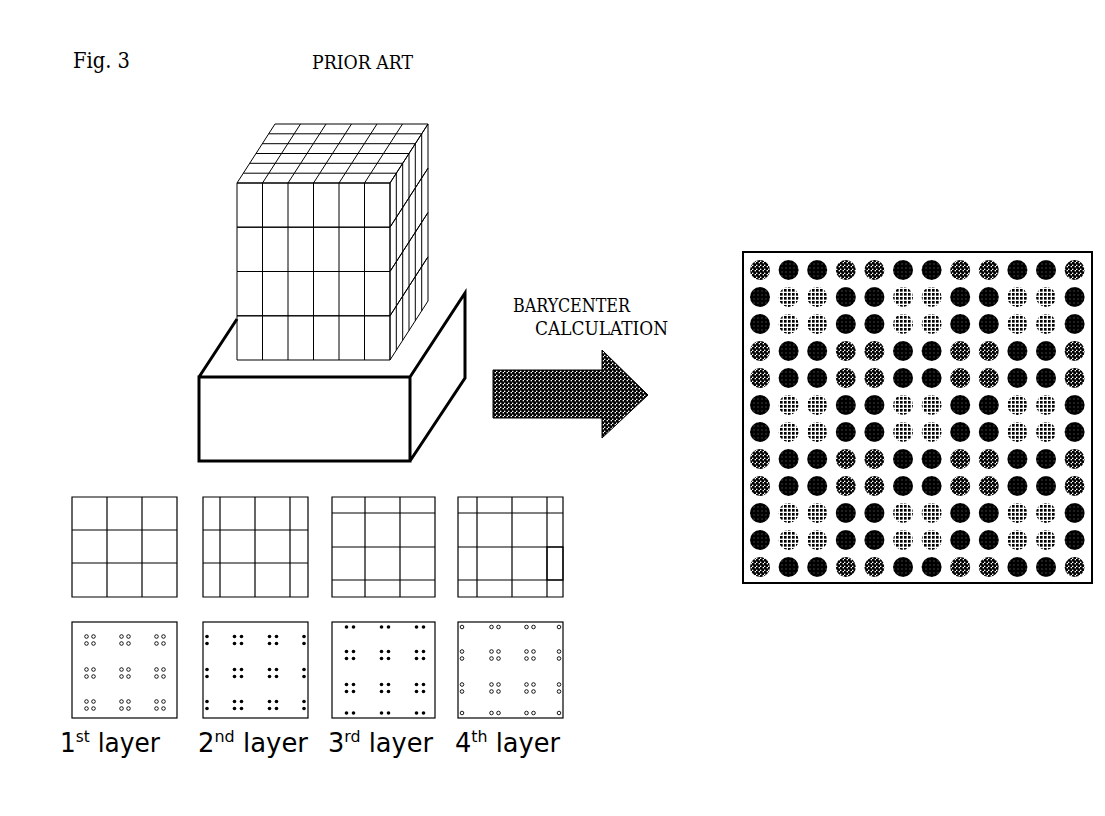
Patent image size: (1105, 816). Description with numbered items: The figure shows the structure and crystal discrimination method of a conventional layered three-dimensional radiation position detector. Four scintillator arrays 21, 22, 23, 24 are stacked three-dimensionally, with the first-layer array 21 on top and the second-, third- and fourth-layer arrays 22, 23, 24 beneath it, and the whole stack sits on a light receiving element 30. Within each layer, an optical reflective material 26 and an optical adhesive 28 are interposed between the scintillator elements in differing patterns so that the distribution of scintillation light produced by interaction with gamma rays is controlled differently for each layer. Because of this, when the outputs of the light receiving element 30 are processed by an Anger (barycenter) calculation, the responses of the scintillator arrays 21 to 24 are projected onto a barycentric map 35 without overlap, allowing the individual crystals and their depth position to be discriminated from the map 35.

The first-layer scintillator array 21 is at (237, 202).
The second-layer scintillator array 22 is at (237, 252).
The third-layer scintillator array 23 is at (237, 299).
The fourth-layer scintillator array 24 is at (237, 346).
The light receiving element 30 is at (199, 413).
The optical reflective material 26 is at (566, 515).
The optical adhesive 28 is at (566, 565).
The barycentric map 35 is at (917, 396).